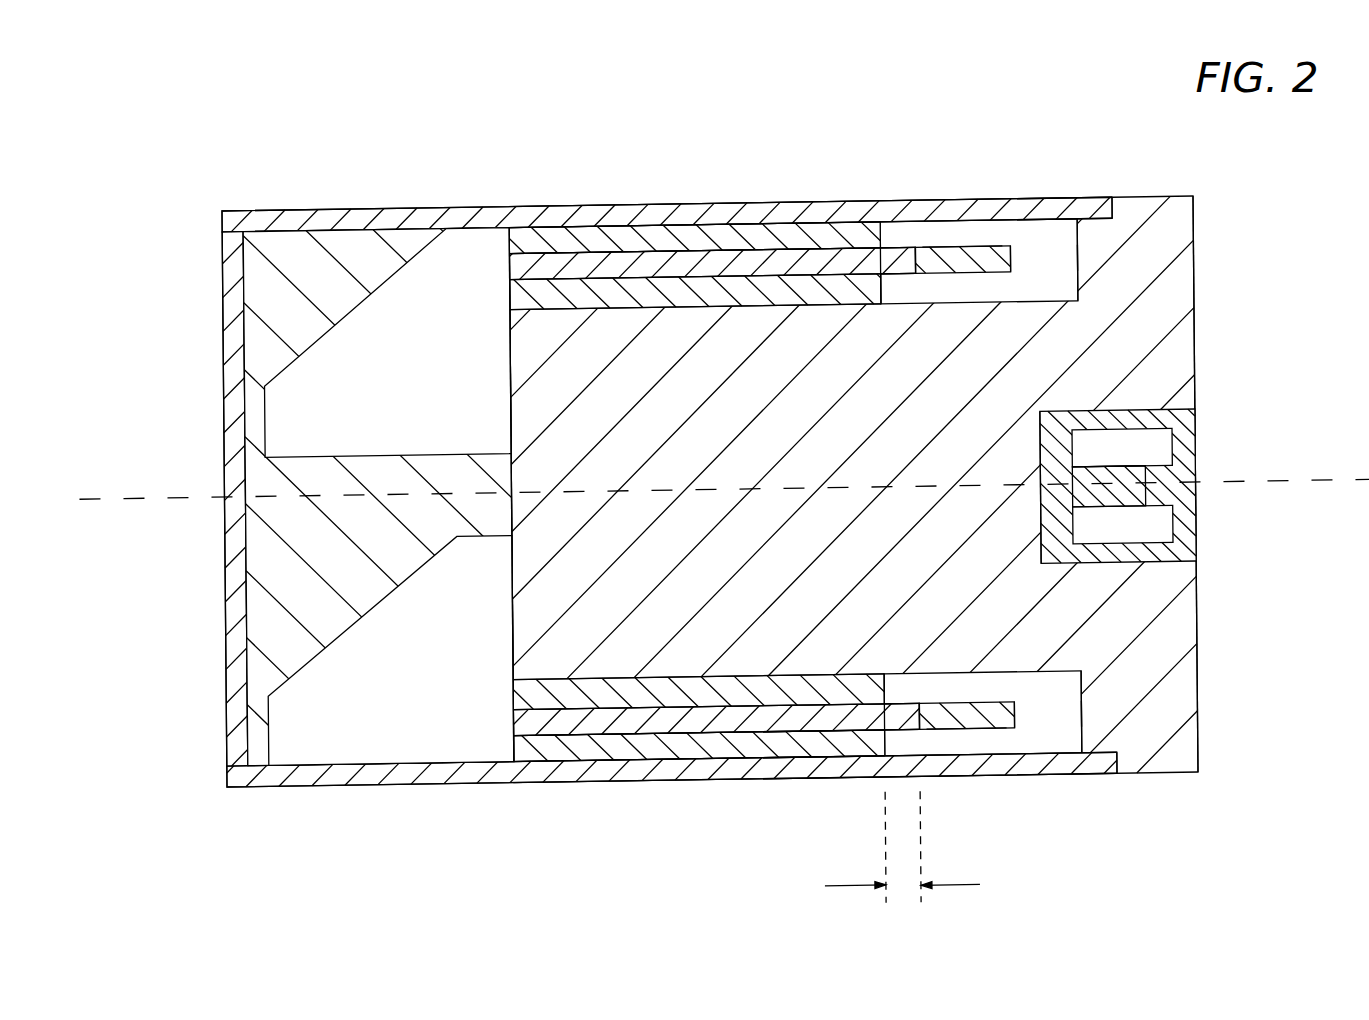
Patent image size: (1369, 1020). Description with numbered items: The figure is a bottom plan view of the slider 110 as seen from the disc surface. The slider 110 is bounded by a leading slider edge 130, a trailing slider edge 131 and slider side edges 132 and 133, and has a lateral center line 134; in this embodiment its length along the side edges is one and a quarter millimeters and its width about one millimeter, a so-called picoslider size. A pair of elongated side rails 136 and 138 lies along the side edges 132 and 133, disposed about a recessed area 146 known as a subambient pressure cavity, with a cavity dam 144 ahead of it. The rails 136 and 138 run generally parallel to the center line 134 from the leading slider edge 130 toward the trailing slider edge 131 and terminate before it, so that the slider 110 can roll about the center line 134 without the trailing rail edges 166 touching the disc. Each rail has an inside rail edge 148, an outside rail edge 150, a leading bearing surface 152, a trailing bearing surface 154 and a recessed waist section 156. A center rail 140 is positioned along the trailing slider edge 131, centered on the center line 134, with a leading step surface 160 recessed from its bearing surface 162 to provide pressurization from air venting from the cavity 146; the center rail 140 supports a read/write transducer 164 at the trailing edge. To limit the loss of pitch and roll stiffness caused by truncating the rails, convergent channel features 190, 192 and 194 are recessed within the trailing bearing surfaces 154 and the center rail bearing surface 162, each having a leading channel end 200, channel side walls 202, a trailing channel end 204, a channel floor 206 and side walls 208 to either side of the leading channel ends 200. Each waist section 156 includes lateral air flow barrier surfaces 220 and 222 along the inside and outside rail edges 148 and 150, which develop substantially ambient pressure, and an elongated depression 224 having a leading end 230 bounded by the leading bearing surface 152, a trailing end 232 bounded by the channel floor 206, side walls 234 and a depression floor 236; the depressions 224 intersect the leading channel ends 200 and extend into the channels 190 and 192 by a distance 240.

The slider 110 is at (173, 104).
The leading slider edge 130 is at (612, 493).
The trailing slider edge 131 is at (1263, 483).
The slider side edge 132 is at (670, 181).
The slider side edge 133 is at (672, 811).
The lateral center line 134 is at (718, 459).
The side rail 136 is at (677, 155).
The side rail 138 is at (683, 825).
The center rail 140 is at (1173, 427).
The cavity dam 144 is at (258, 285).
The recessed area 146 is at (524, 247).
The inside rail edge 148 is at (697, 491).
The outside rail edge 150 is at (696, 486).
The leading bearing surface 152 is at (388, 497).
The trailing bearing surface 154 is at (995, 485).
The recessed waist section 156 is at (697, 481).
The leading step surface 160 is at (1002, 487).
The bearing surface 162 is at (1181, 472).
The read/write transducer 164 is at (1175, 495).
The trailing rail edge 166 is at (1131, 486).
The convergent channel feature 190 is at (956, 167).
The convergent channel feature 192 is at (966, 677).
The convergent channel feature 194 is at (1108, 405).
The leading channel end 200 is at (777, 425).
The channel side wall 202 is at (1036, 475).
The trailing channel end 204 is at (1144, 443).
The channel floor 206 is at (1083, 485).
The side wall 208 is at (947, 493).
The lateral air flow barrier surface 220 is at (697, 492).
The lateral air flow barrier surface 222 is at (696, 494).
The elongated depression 224 is at (511, 47).
The leading end 230 is at (471, 495).
The trailing end 232 is at (907, 488).
The side wall 234 is at (715, 503).
The depression floor 236 is at (823, 490).
The distance 240 is at (928, 857).